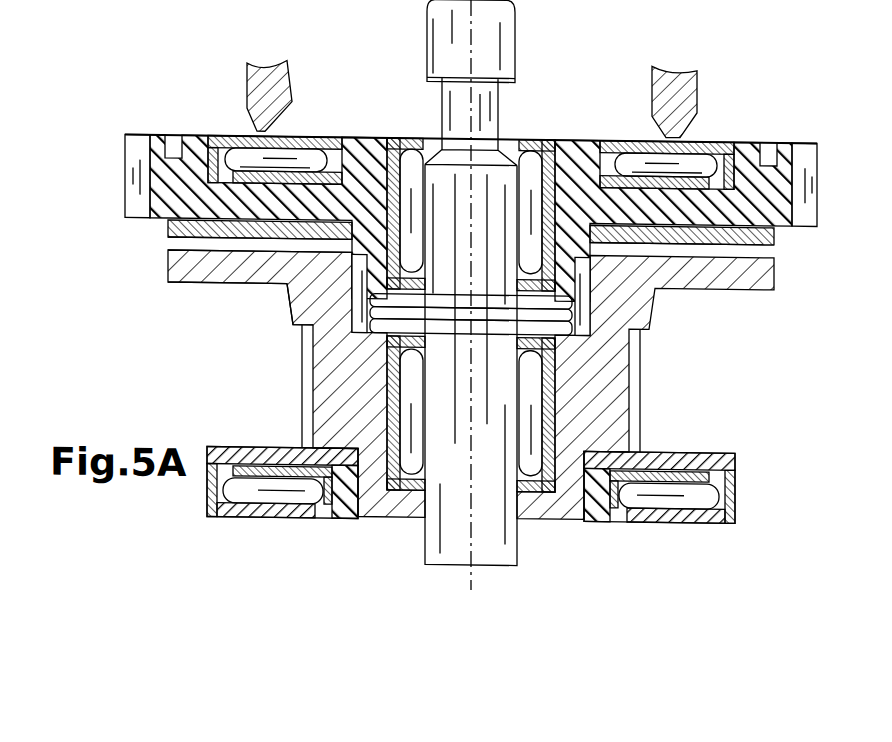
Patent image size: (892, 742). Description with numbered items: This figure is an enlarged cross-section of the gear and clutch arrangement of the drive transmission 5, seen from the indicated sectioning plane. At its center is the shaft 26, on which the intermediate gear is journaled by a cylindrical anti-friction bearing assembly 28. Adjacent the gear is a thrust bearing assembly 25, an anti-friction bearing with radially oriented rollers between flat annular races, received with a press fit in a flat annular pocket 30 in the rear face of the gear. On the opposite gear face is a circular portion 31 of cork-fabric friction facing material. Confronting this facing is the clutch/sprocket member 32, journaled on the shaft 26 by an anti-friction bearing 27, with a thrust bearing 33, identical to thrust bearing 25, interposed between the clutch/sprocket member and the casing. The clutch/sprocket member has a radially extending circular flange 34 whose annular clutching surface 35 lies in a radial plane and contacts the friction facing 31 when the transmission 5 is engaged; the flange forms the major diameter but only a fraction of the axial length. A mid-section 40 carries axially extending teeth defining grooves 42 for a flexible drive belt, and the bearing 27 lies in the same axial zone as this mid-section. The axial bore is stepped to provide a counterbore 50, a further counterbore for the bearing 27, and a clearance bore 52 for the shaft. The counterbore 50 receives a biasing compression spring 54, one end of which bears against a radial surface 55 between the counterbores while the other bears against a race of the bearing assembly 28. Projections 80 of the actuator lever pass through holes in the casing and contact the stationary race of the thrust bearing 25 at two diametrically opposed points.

The drive transmission (section 5A—5A) 5 is at (182, 242).
The thrust bearing assembly 25 is at (297, 132).
The shaft 26 is at (455, 159).
The anti-friction bearing 27 is at (413, 452).
The cylindrical anti-friction bearing assembly 28 is at (363, 134).
The annular pocket 30 is at (218, 130).
The circular portion of friction facing material 31 is at (167, 227).
The clutch/sprocket member 32 is at (302, 302).
The thrust bearing 33 is at (293, 515).
The circular flange 34 is at (190, 272).
The annular clutching surface 35 is at (190, 252).
The mid-section 40 is at (633, 377).
The grooves 42 is at (628, 407).
The counterbore 50 is at (542, 152).
The clearance bore 52 is at (398, 392).
The biasing compression spring 54 is at (555, 303).
The radial surface 55 is at (558, 320).
The projections 80 is at (247, 72).